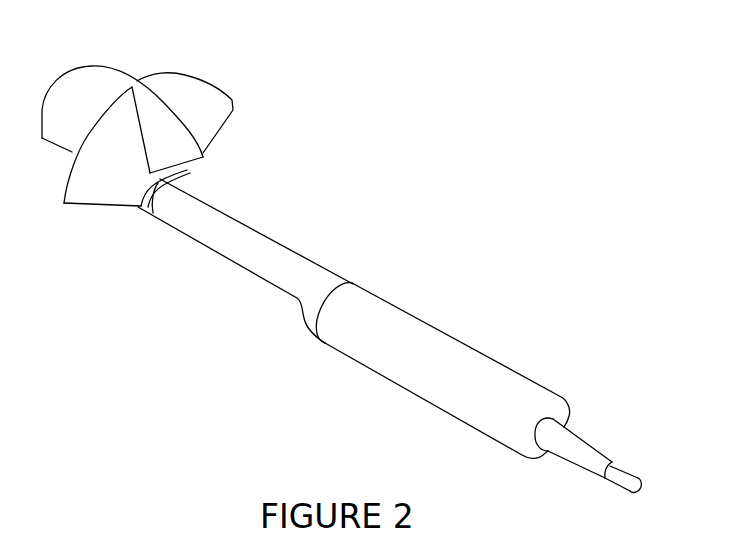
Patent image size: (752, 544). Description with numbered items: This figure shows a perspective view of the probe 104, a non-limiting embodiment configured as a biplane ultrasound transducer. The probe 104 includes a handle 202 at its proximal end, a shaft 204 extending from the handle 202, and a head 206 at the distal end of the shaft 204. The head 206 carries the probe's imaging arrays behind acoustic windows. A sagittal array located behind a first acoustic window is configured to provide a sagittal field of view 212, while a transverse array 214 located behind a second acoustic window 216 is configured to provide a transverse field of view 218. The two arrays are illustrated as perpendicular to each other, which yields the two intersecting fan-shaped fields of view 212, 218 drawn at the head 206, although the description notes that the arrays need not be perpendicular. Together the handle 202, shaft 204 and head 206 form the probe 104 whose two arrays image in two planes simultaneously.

The probe 104 is at (538, 113).
The handle 202 is at (400, 310).
The shaft 204 is at (255, 229).
The head 206 is at (134, 207).
The sagittal field of view 212 is at (106, 70).
The transverse array 214 is at (135, 169).
The second acoustic window 216 is at (183, 173).
The transverse field of view 218 is at (218, 89).